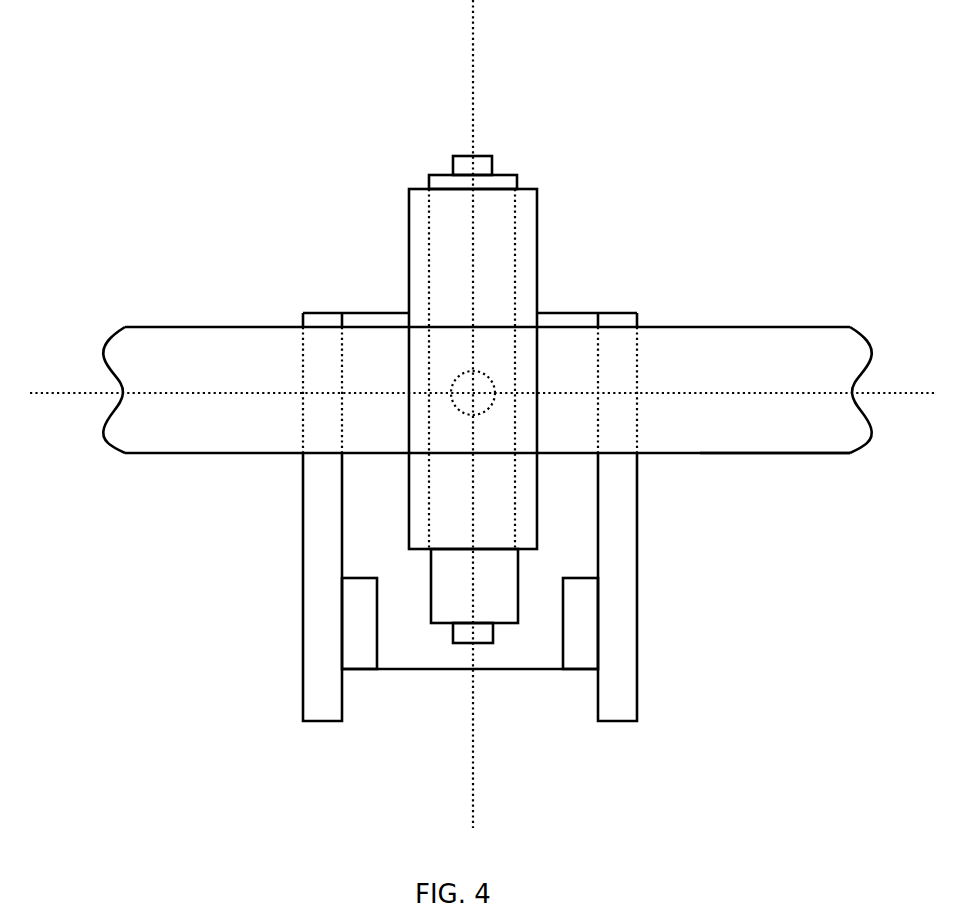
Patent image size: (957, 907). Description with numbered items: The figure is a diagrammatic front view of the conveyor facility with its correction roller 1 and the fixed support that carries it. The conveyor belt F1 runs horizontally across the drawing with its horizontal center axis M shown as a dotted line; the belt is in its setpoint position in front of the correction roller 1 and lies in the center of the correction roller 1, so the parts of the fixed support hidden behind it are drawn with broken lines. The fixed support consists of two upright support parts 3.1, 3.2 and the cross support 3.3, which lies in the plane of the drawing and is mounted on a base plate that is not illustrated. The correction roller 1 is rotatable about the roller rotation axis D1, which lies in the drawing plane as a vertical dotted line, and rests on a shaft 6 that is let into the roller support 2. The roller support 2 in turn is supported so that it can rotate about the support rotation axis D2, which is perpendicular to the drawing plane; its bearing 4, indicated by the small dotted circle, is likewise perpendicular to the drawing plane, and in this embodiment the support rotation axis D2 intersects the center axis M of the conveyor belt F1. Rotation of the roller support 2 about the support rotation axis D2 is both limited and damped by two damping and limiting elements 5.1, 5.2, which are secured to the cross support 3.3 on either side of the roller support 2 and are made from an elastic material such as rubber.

The correction roller 1 is at (540, 272).
The roller support 2 is at (520, 225).
The bearing 4 is at (475, 378).
The shaft 6 is at (498, 158).
The support part of the fixed support 3.1 is at (300, 513).
The support part of the fixed support 3.2 is at (637, 487).
The cross support 3.3 is at (447, 675).
The damping and limiting element 5.1 is at (350, 622).
The damping and limiting element 5.2 is at (590, 609).
The center axis M is at (715, 388).
The conveyor belt F1 is at (740, 455).
The roller rotation axis D1 is at (467, 108).
The support rotation axis D2 is at (480, 390).